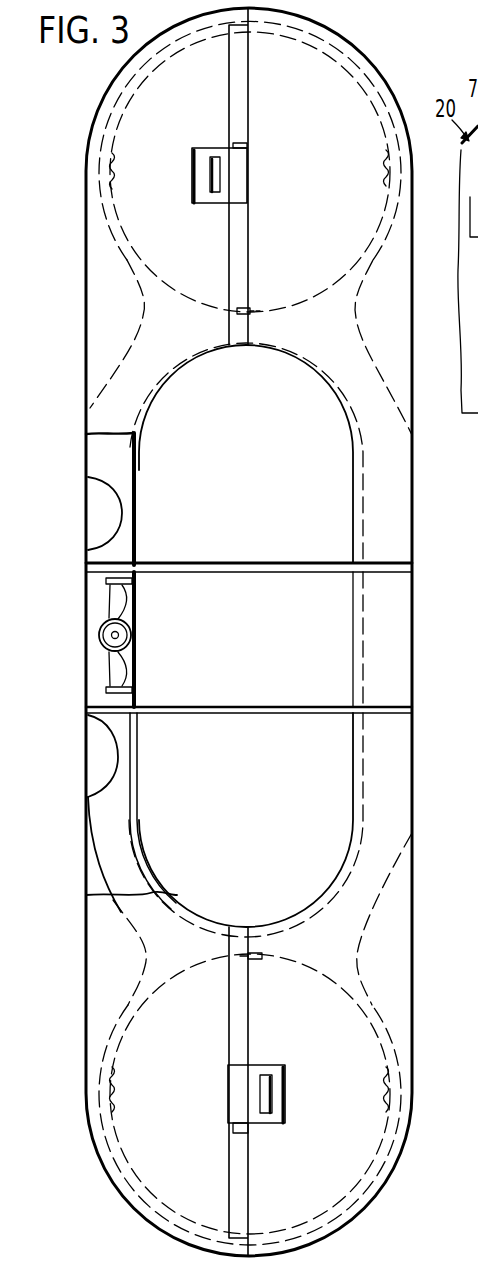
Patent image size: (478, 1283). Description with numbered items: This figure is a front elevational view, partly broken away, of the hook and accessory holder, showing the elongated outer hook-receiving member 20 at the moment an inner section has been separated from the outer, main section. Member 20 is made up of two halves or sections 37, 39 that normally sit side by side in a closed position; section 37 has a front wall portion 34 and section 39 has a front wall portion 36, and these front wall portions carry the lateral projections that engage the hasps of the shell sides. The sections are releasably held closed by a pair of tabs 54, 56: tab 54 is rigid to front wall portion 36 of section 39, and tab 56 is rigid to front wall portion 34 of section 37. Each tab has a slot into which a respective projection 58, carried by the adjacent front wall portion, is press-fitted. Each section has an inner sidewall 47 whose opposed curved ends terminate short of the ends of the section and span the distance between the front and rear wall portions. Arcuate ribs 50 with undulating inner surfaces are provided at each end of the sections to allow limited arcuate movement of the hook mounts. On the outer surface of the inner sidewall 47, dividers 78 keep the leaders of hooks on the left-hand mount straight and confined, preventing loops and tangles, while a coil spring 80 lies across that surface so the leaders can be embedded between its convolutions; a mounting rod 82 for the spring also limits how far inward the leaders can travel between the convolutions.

The outer hook-receiving member 20 is at (378, 65).
The front wall portion 34 is at (102, 408).
The front wall portion 36 is at (395, 525).
The section 37 is at (142, 360).
The section 39 is at (389, 348).
The inner sidewall 47 is at (138, 680).
The arcuate rib 50 is at (115, 208).
The tab 54 is at (193, 165).
The tab 56 is at (280, 1065).
The projection 58 is at (213, 157).
The divider 78 is at (120, 543).
The coil spring 80 is at (100, 640).
The mounting rod 82 is at (118, 635).